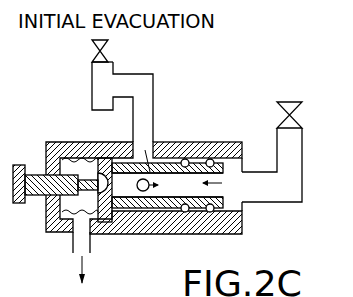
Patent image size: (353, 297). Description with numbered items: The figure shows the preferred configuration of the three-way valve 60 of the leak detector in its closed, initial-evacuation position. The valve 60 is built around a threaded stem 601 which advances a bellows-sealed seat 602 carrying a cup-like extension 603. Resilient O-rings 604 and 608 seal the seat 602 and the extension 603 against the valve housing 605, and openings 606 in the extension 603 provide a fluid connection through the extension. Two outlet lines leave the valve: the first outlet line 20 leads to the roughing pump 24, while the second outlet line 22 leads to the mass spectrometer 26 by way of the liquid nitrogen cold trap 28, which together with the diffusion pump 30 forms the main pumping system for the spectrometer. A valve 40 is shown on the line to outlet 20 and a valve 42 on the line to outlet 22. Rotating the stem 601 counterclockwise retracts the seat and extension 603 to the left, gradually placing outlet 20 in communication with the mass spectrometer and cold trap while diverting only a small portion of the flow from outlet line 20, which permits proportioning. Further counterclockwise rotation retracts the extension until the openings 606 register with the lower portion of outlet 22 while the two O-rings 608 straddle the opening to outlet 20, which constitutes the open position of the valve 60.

The first outlet line 20 is at (92, 82).
The second outlet line 22 is at (290, 160).
The roughing pump 24 is at (102, 95).
The mass spectrometer 26 is at (32, 286).
The liquid nitrogen cold trap 28 is at (72, 286).
The diffusion pump 30 is at (129, 292).
The valve 40 is at (92, 50).
The valve 42 is at (298, 105).
The valve 60 is at (60, 140).
The threaded stem 601 is at (43, 196).
The bellows-sealed seat 602 is at (100, 150).
The cup-like extension 603 is at (200, 163).
The O-ring 604 is at (110, 228).
The valve housing 605 is at (242, 227).
The openings 606 is at (167, 185).
The O-rings 608 is at (185, 212).